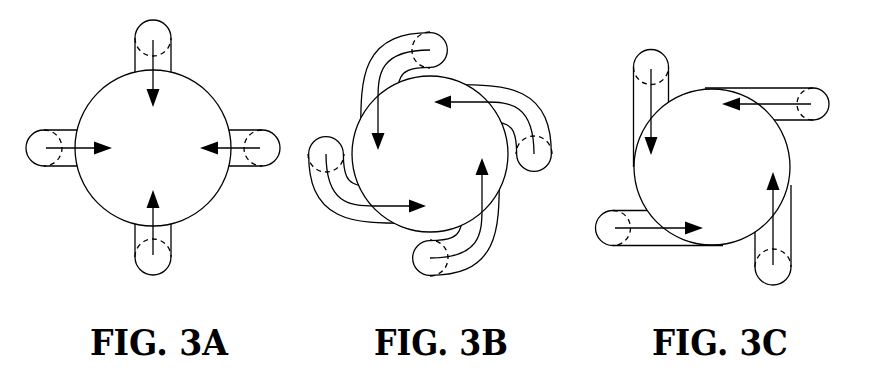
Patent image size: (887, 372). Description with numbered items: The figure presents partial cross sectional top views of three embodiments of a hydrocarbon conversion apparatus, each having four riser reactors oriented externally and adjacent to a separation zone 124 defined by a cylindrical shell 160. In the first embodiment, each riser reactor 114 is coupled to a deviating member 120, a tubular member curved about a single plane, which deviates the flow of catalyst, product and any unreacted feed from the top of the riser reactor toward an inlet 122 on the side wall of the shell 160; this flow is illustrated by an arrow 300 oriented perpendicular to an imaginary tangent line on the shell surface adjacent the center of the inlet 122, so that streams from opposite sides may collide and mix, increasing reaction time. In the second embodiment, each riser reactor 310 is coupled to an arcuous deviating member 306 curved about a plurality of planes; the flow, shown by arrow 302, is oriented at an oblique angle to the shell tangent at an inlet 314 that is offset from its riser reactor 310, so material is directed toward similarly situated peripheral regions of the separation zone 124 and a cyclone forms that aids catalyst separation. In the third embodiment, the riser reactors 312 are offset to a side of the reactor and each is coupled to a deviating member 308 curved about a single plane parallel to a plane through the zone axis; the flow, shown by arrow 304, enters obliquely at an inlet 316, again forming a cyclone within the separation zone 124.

In FIG. 3A, the riser reactor 114 is at (29, 168).
In FIG. 3A, the deviating member 120 is at (137, 57).
In FIG. 3A, the inlet 122 is at (173, 230).
In FIG. 3A, the separation zone 124 is at (138, 158).
In FIG. 3B, the separation zone 124 is at (415, 164).
In FIG. 3C, the separation zone 124 is at (697, 177).
In FIG. 3A, the shell 160 is at (218, 97).
In FIG. 3B, the shell 160 is at (463, 80).
In FIG. 3C, the shell 160 is at (698, 88).
In FIG. 3A, the arrow 300 is at (222, 160).
In FIG. 3B, the arrow 302 is at (475, 257).
In FIG. 3C, the arrow 304 is at (785, 229).
In FIG. 3B, the arcuous deviating member 306 is at (400, 34).
In FIG. 3C, the deviating member 308 is at (634, 87).
In FIG. 3B, the riser reactor 310 is at (418, 252).
In FIG. 3C, the riser reactor 312 is at (760, 278).
In FIG. 3B, the inlet 314 is at (497, 212).
In FIG. 3C, the inlet 316 is at (782, 119).